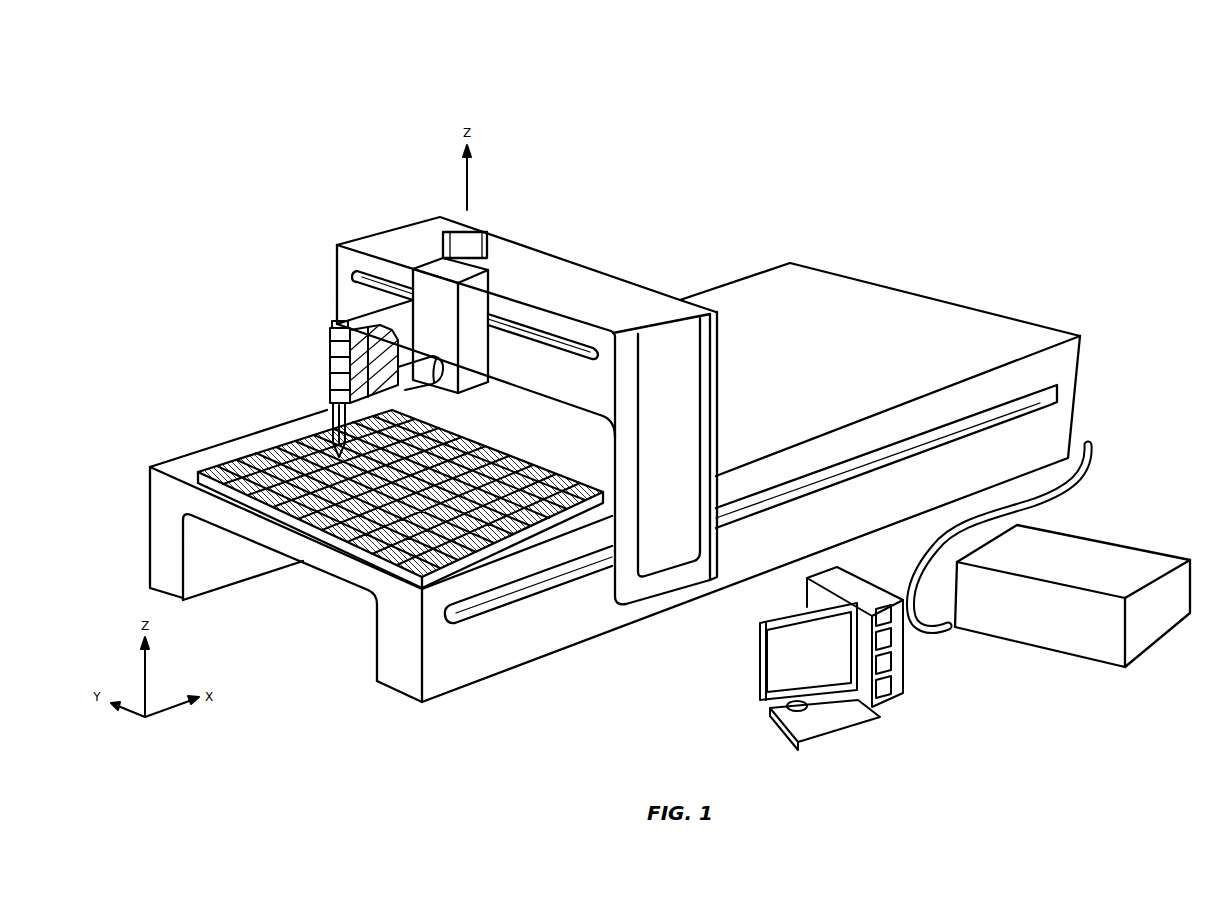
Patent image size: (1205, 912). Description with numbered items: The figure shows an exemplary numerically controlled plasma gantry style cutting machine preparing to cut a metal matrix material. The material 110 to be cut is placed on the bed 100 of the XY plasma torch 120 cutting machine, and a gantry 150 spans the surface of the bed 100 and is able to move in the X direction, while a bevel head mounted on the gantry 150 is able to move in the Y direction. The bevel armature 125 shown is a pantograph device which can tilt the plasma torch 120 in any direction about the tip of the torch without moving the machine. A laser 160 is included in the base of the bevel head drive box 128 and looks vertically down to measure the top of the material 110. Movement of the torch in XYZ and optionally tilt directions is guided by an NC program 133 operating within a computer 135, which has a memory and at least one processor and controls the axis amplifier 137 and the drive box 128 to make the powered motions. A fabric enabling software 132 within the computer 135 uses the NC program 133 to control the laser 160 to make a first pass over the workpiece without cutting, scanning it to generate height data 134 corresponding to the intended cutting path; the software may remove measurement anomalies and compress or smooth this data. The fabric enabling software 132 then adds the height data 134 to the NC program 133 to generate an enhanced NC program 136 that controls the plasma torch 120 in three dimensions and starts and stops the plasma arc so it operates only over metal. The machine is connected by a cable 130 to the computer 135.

The bed 100 is at (995, 335).
The material 110 is at (238, 440).
The plasma torch 120 is at (328, 405).
The bevel armature 125 is at (338, 342).
The bevel head drive box 128 is at (433, 290).
The cable 130 is at (1093, 447).
The fabric enabling software 132 is at (888, 697).
The NC program 133 is at (892, 617).
The height data 134 is at (892, 641).
The computer 135 is at (900, 680).
The enhanced NC program 136 is at (892, 664).
The axis amplifier 137 is at (1035, 620).
The gantry 150 is at (553, 253).
The laser 160 is at (457, 395).